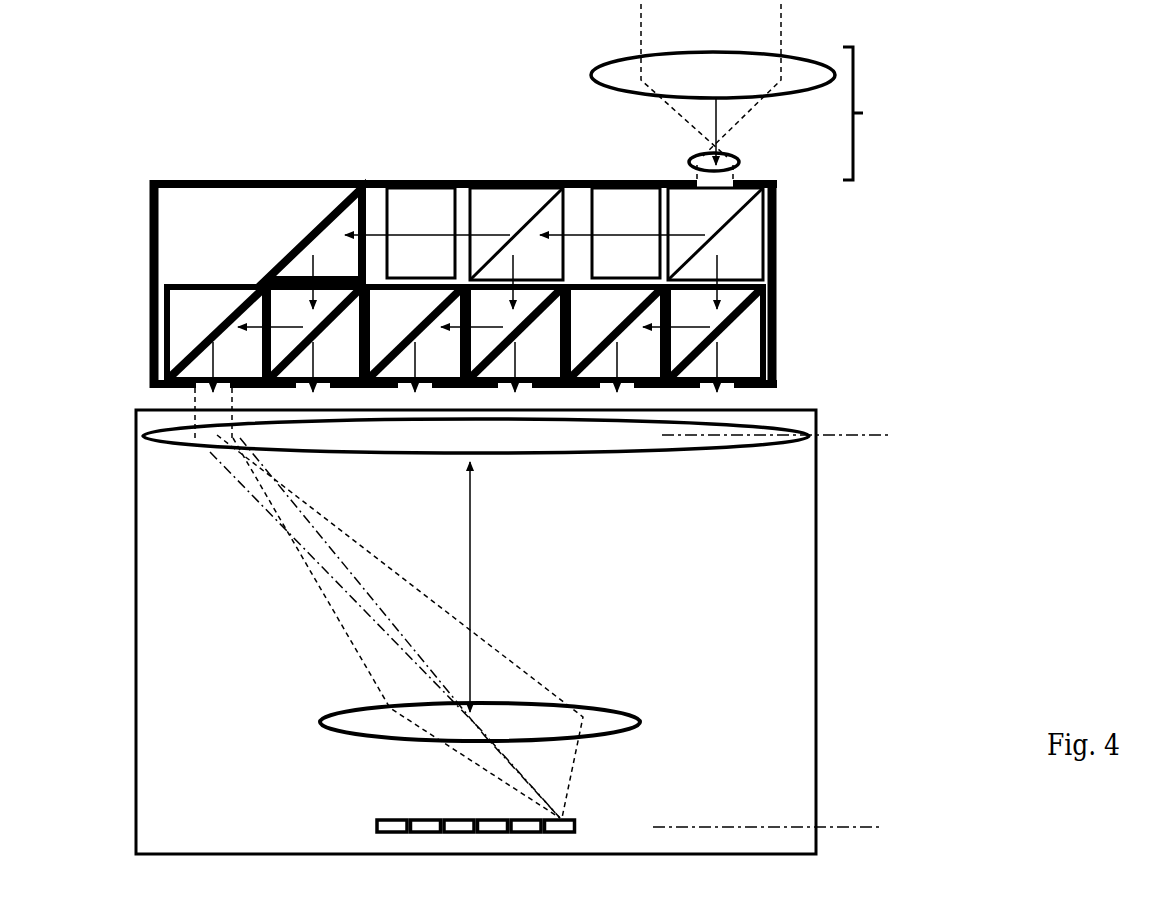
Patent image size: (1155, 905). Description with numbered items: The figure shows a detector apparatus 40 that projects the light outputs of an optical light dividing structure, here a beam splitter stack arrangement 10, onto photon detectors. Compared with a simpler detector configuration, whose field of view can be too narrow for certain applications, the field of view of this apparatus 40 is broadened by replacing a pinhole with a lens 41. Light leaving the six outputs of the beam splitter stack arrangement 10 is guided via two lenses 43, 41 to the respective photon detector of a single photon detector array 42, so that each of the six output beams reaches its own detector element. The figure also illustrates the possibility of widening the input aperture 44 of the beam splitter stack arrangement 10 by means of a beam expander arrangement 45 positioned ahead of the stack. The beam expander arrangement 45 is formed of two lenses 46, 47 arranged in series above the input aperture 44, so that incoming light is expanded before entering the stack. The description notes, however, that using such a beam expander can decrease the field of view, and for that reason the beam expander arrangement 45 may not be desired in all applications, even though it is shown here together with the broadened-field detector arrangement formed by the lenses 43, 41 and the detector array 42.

The beam splitter stack arrangement 10 is at (167, 210).
The detector apparatus 40 is at (587, 621).
The lens 41 is at (350, 713).
The single photon detector array 42 is at (387, 817).
The lens 43 is at (163, 437).
The input aperture 44 is at (727, 195).
The beam expander arrangement 45 is at (732, 93).
The lens 46 is at (633, 68).
The lens 47 is at (690, 163).